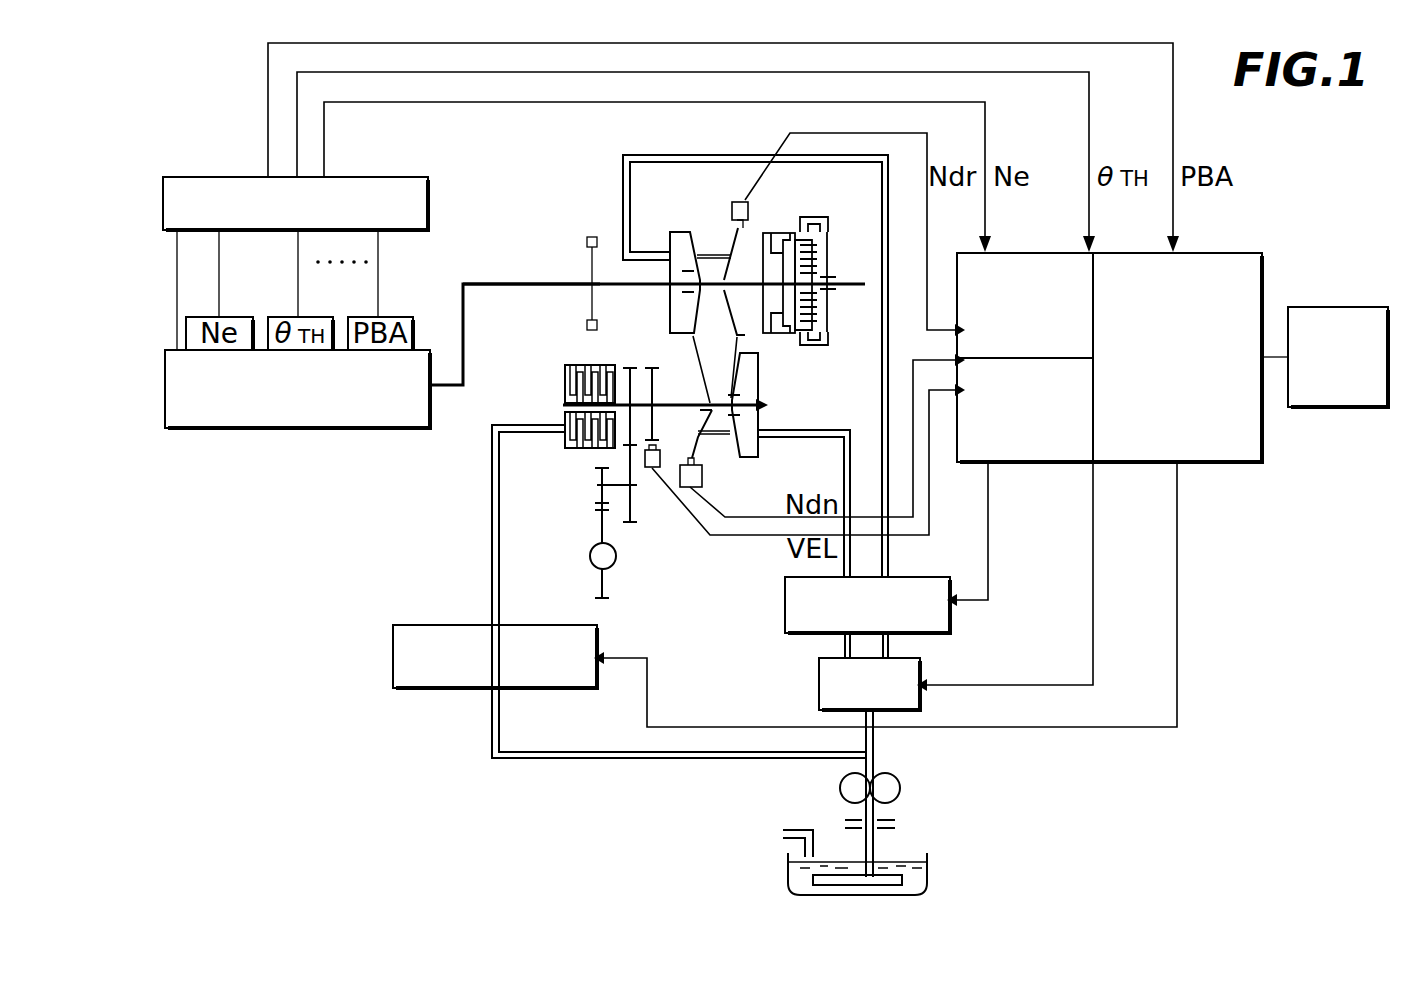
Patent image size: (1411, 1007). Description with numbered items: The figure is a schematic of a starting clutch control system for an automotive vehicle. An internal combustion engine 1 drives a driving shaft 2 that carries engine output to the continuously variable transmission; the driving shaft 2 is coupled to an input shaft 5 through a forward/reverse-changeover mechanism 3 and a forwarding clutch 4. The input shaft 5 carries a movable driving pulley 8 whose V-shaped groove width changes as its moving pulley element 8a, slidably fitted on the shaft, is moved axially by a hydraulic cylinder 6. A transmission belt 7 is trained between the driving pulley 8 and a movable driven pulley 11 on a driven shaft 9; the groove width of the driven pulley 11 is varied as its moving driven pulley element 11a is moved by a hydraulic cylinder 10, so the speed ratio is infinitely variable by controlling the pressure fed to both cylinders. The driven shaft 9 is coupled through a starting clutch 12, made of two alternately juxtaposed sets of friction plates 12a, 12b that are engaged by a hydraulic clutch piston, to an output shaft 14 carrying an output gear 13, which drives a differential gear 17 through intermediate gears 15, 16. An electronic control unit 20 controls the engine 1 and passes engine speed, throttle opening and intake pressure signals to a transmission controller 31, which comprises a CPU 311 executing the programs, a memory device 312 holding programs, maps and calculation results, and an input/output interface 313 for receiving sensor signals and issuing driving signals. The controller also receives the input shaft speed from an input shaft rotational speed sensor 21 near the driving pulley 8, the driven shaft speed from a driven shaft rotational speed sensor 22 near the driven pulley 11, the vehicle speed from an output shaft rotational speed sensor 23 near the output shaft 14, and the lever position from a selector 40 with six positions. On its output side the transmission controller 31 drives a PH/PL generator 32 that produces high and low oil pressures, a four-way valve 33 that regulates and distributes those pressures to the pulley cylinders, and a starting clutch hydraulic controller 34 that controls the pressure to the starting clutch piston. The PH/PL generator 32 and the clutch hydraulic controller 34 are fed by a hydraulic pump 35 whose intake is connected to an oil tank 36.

The internal combustion engine 1 is at (418, 430).
The driving shaft 2 is at (615, 283).
The forward/reverse-changeover mechanism 3 is at (827, 262).
The forwarding clutch 4 is at (777, 232).
The input shaft 5 is at (755, 332).
The hydraulic cylinder 6 is at (677, 237).
The transmission belt 7 is at (717, 250).
The movable driving pulley 8 is at (698, 222).
The moving pulley element 8a is at (715, 329).
The driven shaft 9 is at (775, 410).
The hydraulic cylinder 10 is at (752, 378).
The movable driven pulley 11 is at (768, 445).
The moving driven pulley element 11a is at (700, 455).
The starting clutch 12 is at (543, 379).
The friction plates 12a is at (565, 376).
The friction plates 12b is at (565, 395).
The output gear 13 is at (640, 365).
The output shaft 14 is at (611, 291).
The intermediate gear 15 is at (620, 507).
The intermediate gear 16 is at (598, 471).
The differential gear 17 is at (590, 553).
The electronic control unit 20 is at (395, 176).
The input shaft rotational speed sensor 21 is at (750, 212).
The driven shaft rotational speed sensor 22 is at (703, 482).
The output shaft rotational speed sensor 23 is at (652, 470).
The transmission controller 31 is at (1142, 362).
The CPU 311 is at (1042, 252).
The memory device 312 is at (1035, 462).
The input/output interface 313 is at (1250, 462).
The PH/PL generator 32 is at (925, 665).
The four-way valve 33 is at (920, 575).
The starting clutch hydraulic controller 34 is at (430, 625).
The hydraulic pump 35 is at (900, 775).
The oil tank 36 is at (927, 862).
The selector 40 is at (1350, 305).